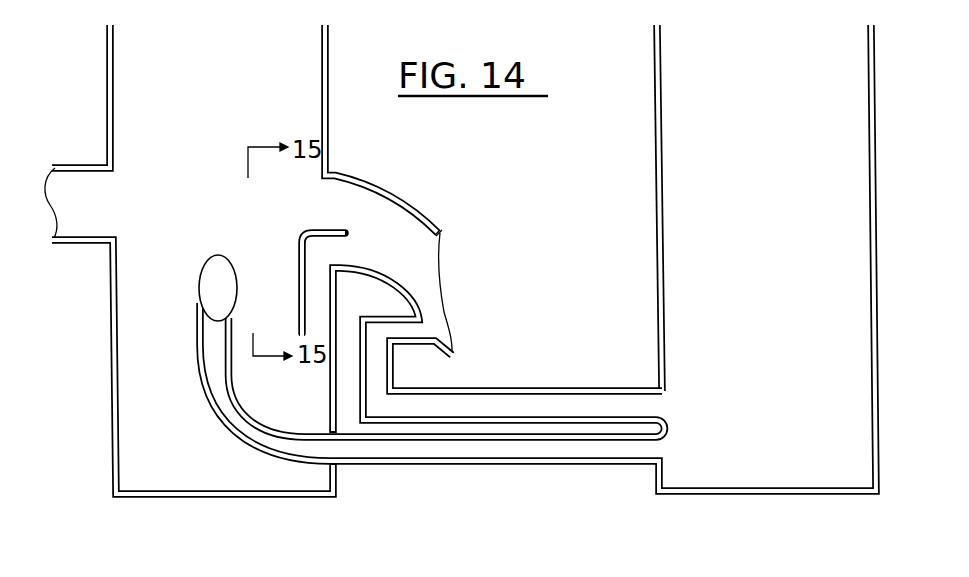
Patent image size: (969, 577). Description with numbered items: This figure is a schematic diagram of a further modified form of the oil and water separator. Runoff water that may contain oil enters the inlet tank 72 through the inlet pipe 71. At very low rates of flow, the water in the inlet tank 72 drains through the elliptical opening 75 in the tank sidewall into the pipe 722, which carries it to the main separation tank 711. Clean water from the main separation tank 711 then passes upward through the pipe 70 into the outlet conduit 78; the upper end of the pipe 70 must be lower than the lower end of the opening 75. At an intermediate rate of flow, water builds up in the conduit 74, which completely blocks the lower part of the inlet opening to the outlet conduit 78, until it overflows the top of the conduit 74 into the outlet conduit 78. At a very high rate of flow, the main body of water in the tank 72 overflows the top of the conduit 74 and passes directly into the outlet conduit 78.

The pipe 70 is at (391, 380).
The inlet pipe 71 is at (87, 183).
The inlet tank 72 is at (118, 427).
The conduit 74 is at (298, 250).
The elliptical opening 75 is at (222, 298).
The outlet conduit 78 is at (365, 193).
The main separation tank 711 is at (728, 474).
The pipe 722 is at (267, 434).